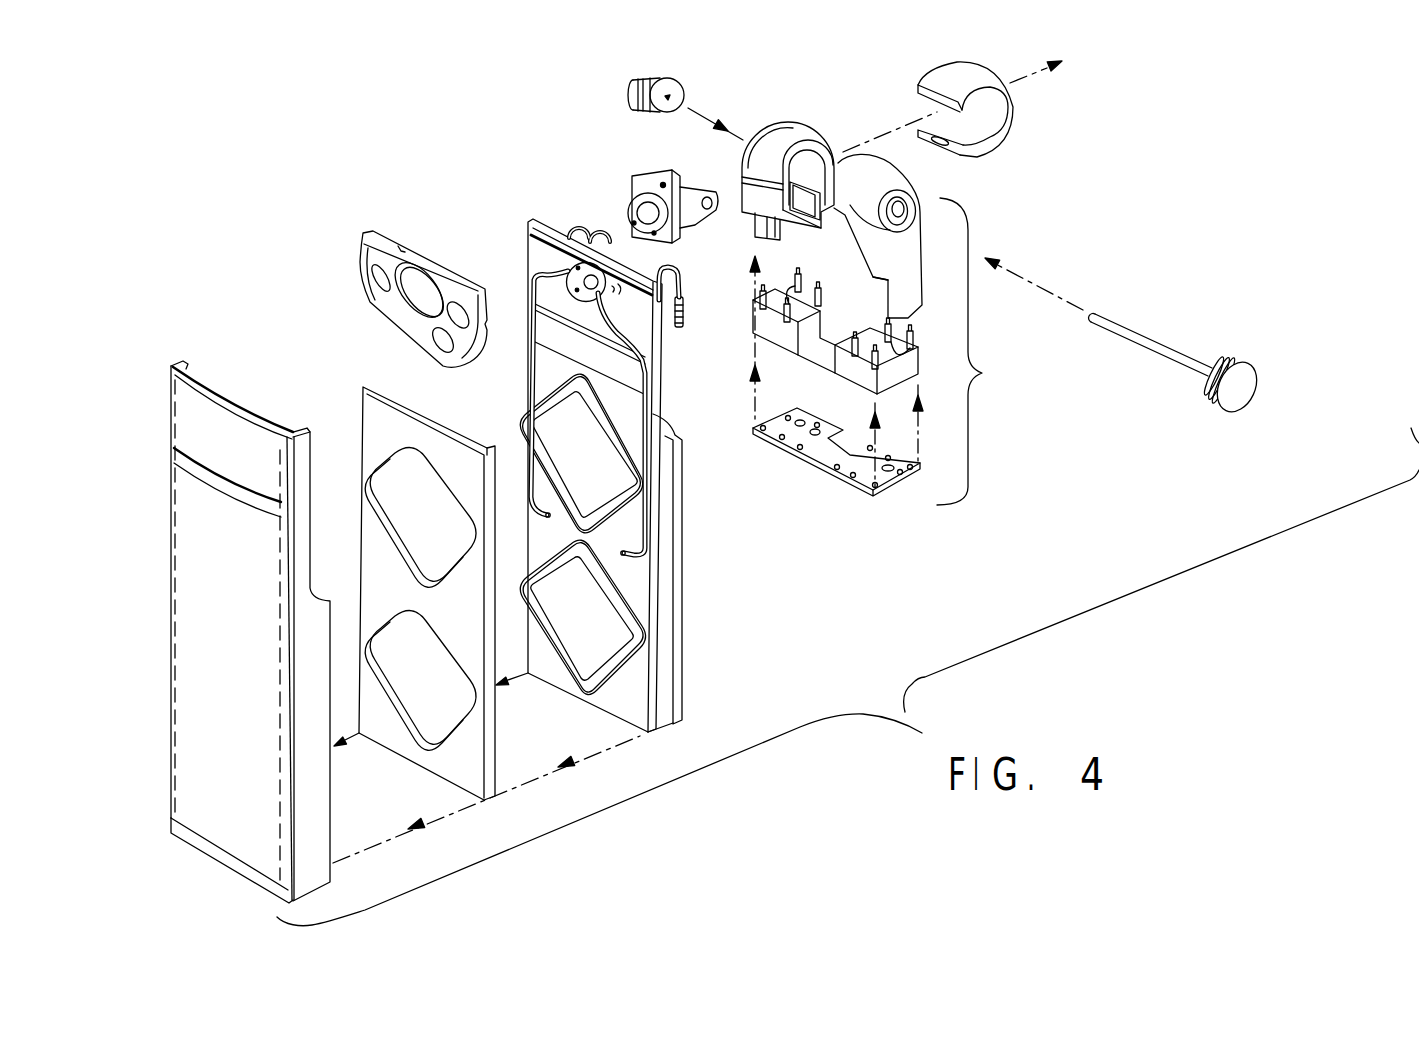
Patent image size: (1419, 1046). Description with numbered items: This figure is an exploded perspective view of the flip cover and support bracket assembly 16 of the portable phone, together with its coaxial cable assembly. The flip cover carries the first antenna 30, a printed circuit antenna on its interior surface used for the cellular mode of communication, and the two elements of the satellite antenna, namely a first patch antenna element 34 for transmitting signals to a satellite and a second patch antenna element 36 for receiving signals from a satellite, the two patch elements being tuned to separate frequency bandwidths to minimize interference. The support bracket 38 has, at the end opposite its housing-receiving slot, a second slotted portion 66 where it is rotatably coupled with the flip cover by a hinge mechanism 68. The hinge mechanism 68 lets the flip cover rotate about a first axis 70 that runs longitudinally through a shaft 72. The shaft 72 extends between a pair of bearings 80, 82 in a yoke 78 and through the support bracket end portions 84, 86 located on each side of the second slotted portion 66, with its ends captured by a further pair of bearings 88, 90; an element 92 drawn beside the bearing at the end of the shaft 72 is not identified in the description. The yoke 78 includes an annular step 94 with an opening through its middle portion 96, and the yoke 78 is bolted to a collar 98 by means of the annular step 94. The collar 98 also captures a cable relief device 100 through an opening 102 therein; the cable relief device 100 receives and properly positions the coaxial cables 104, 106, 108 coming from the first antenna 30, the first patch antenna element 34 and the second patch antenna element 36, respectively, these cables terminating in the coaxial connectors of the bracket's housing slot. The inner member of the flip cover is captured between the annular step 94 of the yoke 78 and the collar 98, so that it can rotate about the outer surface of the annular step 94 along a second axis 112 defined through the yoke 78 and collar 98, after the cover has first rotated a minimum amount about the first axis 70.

The support bracket assembly 16 is at (850, 122).
The first antenna 30 is at (550, 335).
The first patch antenna element 34 is at (568, 639).
The second patch antenna element 36 is at (570, 474).
The support bracket 38 is at (984, 375).
The second slotted portion 66 is at (742, 173).
The hinge mechanism 68 is at (970, 200).
The first axis 70 is at (1030, 282).
The shaft 72 is at (1150, 338).
The yoke 78 is at (640, 170).
The bearing 80 is at (695, 222).
The bearing 82 is at (662, 167).
The support bracket end portion 84 is at (913, 182).
The support bracket end portion 86 is at (792, 135).
The bearing 88 is at (632, 78).
The bearing 90 is at (1247, 387).
The lamp base 92 is at (685, 97).
The annular step 94 is at (629, 208).
The middle portion 96 is at (673, 250).
The collar 98 is at (530, 247).
The cable relief device 100 is at (382, 308).
The opening 102 is at (400, 318).
The coaxial cable 104 is at (646, 371).
The coaxial cable 106 is at (527, 397).
The coaxial cable 108 is at (660, 452).
The second axis 112 is at (1033, 75).